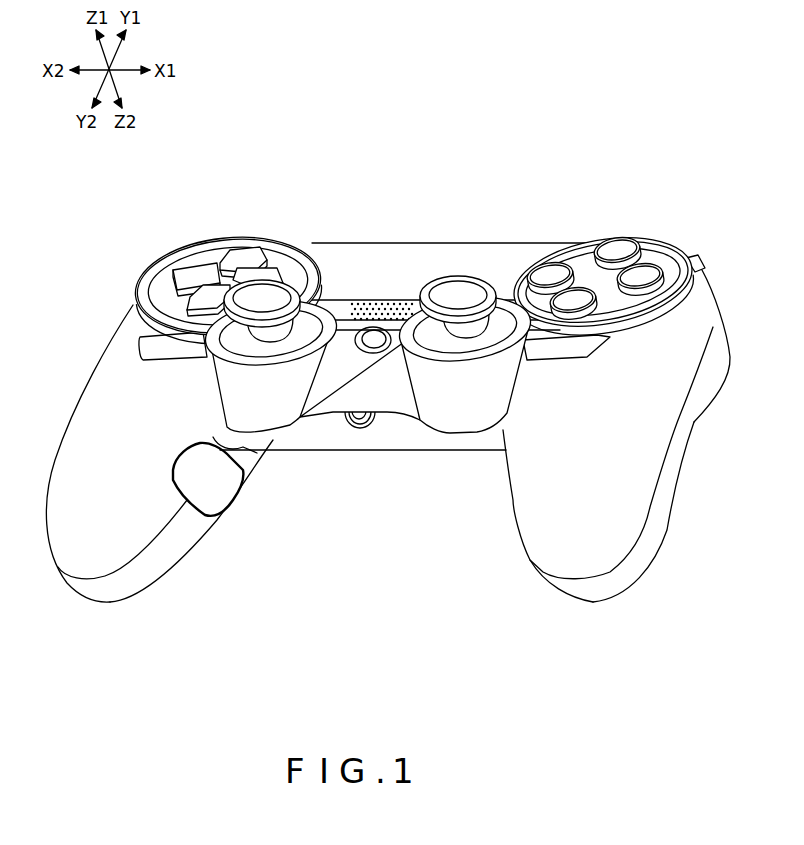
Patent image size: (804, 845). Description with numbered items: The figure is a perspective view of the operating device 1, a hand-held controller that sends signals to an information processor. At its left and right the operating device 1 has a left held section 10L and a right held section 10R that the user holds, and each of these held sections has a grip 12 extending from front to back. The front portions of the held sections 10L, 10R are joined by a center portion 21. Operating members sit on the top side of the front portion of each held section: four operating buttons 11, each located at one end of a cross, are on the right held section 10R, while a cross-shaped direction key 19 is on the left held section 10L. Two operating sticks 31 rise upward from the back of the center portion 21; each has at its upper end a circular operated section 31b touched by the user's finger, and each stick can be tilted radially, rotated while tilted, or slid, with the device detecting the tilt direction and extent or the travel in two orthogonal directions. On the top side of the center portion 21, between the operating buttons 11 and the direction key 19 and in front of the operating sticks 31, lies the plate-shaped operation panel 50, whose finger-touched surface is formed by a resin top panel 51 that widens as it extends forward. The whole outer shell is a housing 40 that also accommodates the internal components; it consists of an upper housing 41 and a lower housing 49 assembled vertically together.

The operating device 1 is at (444, 158).
The left held section 10L is at (73, 610).
The right held section 10R is at (592, 612).
The operating buttons 11 is at (588, 292).
The grip 12 is at (84, 391).
The direction key 19 is at (208, 254).
The center portion 21 is at (345, 460).
The operating stick 31 is at (367, 304).
The operated section 31b is at (266, 292).
The housing 40 is at (392, 466).
The upper housing 41 is at (397, 405).
The lower housing 49 is at (417, 438).
The operation panel 50 is at (430, 264).
The top panel 51 is at (387, 258).